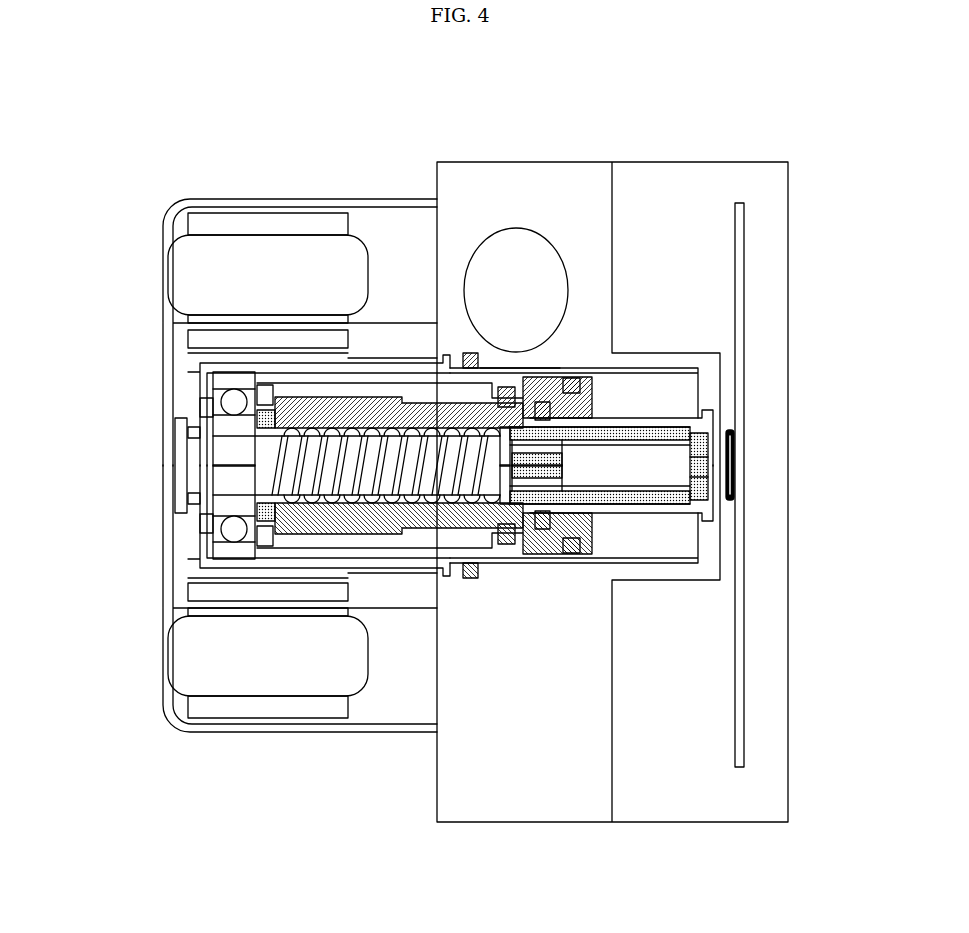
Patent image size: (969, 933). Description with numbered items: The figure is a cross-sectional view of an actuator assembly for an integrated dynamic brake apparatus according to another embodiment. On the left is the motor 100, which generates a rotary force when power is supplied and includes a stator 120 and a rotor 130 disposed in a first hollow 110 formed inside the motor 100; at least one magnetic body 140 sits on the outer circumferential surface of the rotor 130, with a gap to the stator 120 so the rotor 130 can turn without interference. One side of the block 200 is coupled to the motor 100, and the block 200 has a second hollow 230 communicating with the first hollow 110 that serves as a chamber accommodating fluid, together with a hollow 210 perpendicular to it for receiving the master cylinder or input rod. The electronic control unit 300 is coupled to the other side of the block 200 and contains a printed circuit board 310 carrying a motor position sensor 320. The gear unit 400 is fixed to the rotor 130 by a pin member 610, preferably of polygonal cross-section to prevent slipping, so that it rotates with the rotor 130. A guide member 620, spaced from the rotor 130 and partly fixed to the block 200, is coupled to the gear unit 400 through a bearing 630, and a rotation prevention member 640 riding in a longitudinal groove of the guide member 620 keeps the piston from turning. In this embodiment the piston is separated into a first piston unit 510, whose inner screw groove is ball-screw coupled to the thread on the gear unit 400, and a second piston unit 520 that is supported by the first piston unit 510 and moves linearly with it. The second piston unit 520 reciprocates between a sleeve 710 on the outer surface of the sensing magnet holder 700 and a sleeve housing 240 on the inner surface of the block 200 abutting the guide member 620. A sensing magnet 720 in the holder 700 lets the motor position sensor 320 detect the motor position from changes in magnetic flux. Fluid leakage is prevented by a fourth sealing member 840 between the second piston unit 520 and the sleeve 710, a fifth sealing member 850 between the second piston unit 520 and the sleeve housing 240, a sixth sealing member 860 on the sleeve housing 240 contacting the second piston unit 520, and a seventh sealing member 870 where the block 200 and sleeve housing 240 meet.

The motor 100 is at (160, 172).
The first hollow 110 is at (387, 343).
The stator 120 is at (238, 257).
The rotor 130 is at (195, 372).
The magnetic body 140 is at (193, 336).
The block 200 is at (559, 186).
The hollow 210 is at (504, 250).
The second hollow 230 is at (660, 542).
The sleeve housing 240 is at (513, 370).
The electronic control unit 300 is at (762, 182).
The printed circuit board 310 is at (743, 262).
The motor position sensor 320 is at (733, 465).
The gear unit 400 is at (288, 453).
The first piston unit 510 is at (317, 402).
The second piston unit 520 is at (545, 392).
The pin member 610 is at (185, 465).
The guide member 620 is at (277, 545).
The bearing 630 is at (215, 518).
The rotation prevention member 640 is at (258, 537).
The sensing magnet holder 700 is at (700, 425).
The sleeve 710 is at (712, 520).
The sensing magnet 720 is at (715, 500).
The fourth sealing member 840 is at (537, 532).
The fifth sealing member 850 is at (565, 553).
The sixth sealing member 860 is at (508, 542).
The seventh sealing member 870 is at (467, 580).